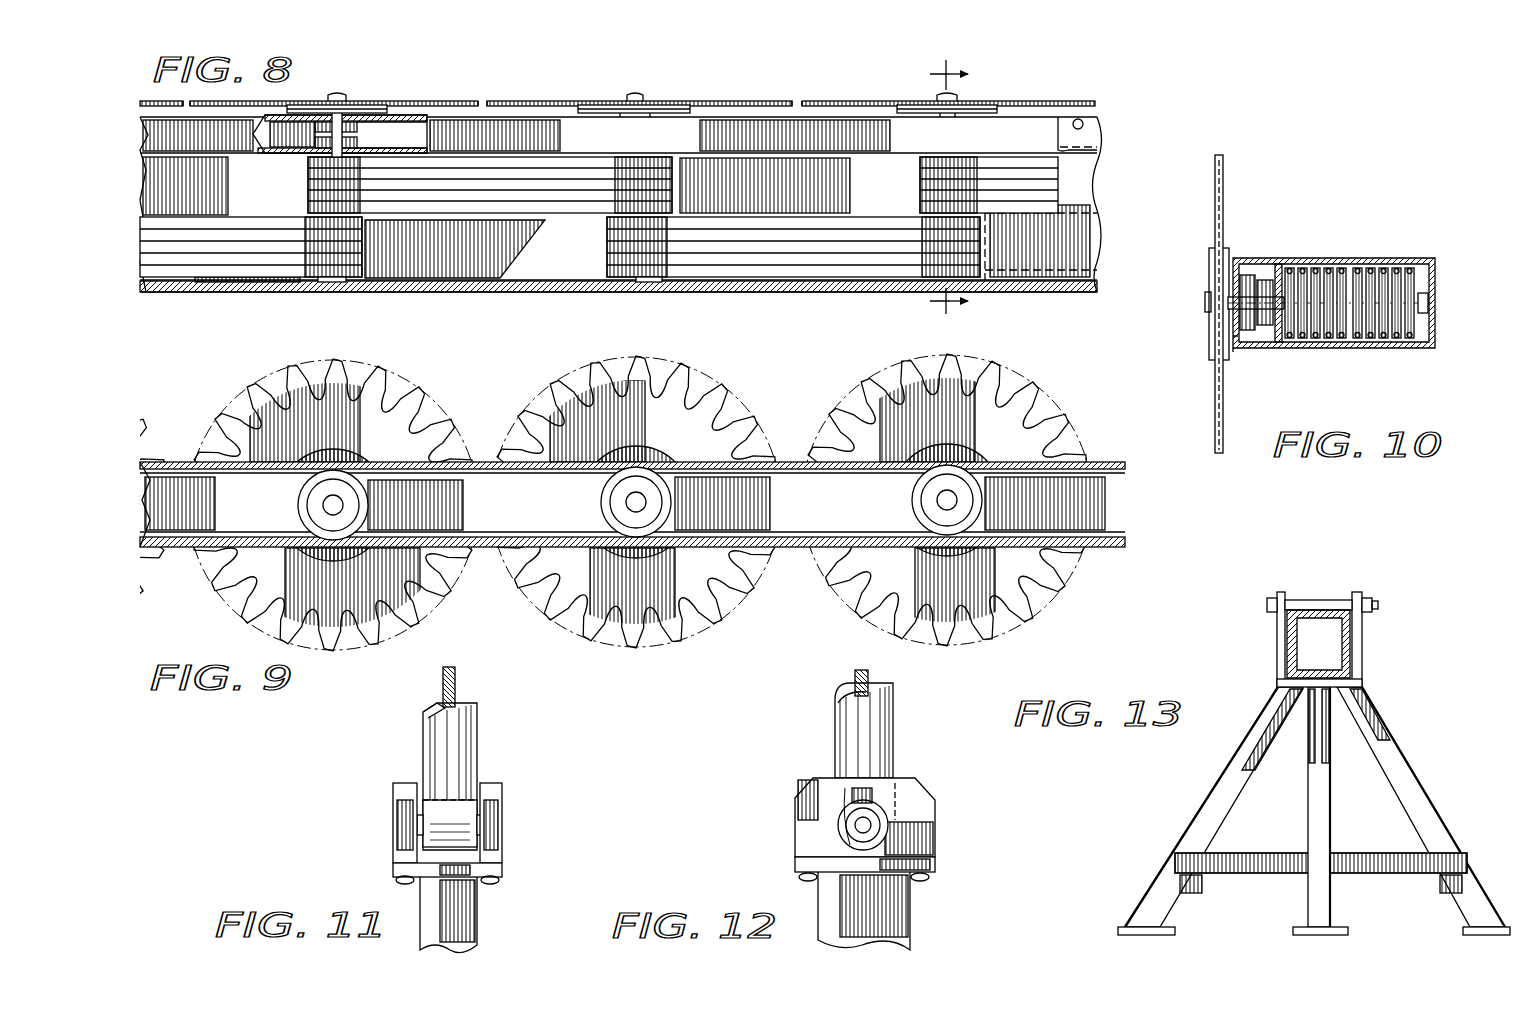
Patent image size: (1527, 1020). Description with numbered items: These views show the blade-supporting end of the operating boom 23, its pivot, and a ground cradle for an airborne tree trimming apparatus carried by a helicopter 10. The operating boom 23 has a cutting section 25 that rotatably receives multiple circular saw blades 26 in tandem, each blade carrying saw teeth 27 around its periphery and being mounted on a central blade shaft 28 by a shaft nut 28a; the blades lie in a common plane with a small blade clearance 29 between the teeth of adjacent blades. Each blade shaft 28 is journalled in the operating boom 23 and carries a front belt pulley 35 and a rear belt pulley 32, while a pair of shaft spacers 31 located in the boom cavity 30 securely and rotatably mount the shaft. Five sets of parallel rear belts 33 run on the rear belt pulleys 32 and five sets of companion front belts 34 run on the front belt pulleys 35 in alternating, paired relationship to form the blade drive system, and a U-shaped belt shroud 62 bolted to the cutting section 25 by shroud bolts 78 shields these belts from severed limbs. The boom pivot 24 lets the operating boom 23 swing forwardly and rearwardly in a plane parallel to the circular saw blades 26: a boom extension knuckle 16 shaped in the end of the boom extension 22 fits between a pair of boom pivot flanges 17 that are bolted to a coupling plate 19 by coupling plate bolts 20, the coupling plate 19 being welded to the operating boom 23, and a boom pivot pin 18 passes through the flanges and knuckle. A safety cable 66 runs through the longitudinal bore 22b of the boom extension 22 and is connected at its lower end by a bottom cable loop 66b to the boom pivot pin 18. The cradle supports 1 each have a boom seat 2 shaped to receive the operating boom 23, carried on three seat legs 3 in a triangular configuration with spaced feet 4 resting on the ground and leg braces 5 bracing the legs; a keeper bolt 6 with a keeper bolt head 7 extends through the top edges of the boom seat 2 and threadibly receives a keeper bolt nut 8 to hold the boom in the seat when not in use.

In FIG. 13, the cradle supports 1 is at (1392, 628).
In FIG. 13, the boom seat 2 is at (1372, 654).
In FIG. 13, the seat legs 3 is at (1383, 748).
In FIG. 13, the feet 4 is at (1170, 920).
In FIG. 13, the leg braces 5 is at (1385, 856).
In FIG. 13, the keeper bolt 6 is at (1333, 594).
In FIG. 13, the keeper bolt head 7 is at (1270, 598).
In FIG. 13, the keeper bolt nut 8 is at (1366, 598).
In FIG. 8, the helicopter 10 is at (931, 187).
In FIG. 11, the boom extension knuckle 16 is at (468, 830).
In FIG. 12, the boom extension knuckle 16 is at (835, 815).
In FIG. 11, the boom pivot flanges 17 is at (400, 826).
In FIG. 12, the boom pivot flanges 17 is at (920, 842).
In FIG. 12, the boom pivot pin 18 is at (887, 824).
In FIG. 11, the coupling plate 19 is at (398, 868).
In FIG. 12, the coupling plate 19 is at (802, 865).
In FIG. 11, the coupling plate bolts 20 is at (496, 884).
In FIG. 12, the coupling plate bolts 20 is at (930, 878).
In FIG. 11, the boom extension 22 is at (482, 766).
In FIG. 12, the boom extension 22 is at (832, 731).
In FIG. 11, the longitudinal bore 22b is at (436, 702).
In FIG. 8, the operating boom 23 is at (763, 160).
In FIG. 10, the operating boom 23 is at (1258, 270).
In FIG. 9, the operating boom 23 is at (178, 458).
In FIG. 11, the operating boom 23 is at (486, 928).
In FIG. 12, the operating boom 23 is at (916, 921).
In FIG. 13, the operating boom 23 is at (1316, 660).
In FIG. 11, the boom pivot 24 is at (506, 806).
In FIG. 8, the cutting section 25 is at (613, 88).
In FIG. 9, the cutting section 25 is at (784, 366).
In FIG. 8, the circular saw blades 26 is at (862, 92).
In FIG. 10, the circular saw blades 26 is at (1232, 211).
In FIG. 9, the circular saw blades 26 is at (532, 613).
In FIG. 9, the saw teeth 27 is at (425, 406).
In FIG. 8, the blade shaft 28 is at (668, 113).
In FIG. 10, the blade shaft 28 is at (1438, 301).
In FIG. 9, the blade shaft 28 is at (326, 502).
In FIG. 8, the shaft nut 28a is at (338, 98).
In FIG. 10, the shaft nut 28a is at (1208, 302).
In FIG. 8, the blade clearance 29 is at (487, 101).
In FIG. 8, the boom cavity 30 is at (416, 135).
In FIG. 9, the boom cavity 30 is at (505, 494).
In FIG. 8, the shaft spacers 31 is at (316, 143).
In FIG. 10, the shaft spacers 31 is at (1252, 340).
In FIG. 8, the rear belt pulley 32 is at (344, 283).
In FIG. 10, the rear belt pulley 32 is at (1412, 272).
In FIG. 9, the rear belt pulley 32 is at (312, 514).
In FIG. 8, the rear belts 33 is at (364, 232).
In FIG. 10, the rear belts 33 is at (1412, 341).
In FIG. 8, the front belts 34 is at (496, 185).
In FIG. 10, the front belts 34 is at (1312, 341).
In FIG. 9, the front belts 34 is at (437, 470).
In FIG. 8, the front belt pulley 35 is at (360, 156).
In FIG. 10, the front belt pulley 35 is at (1262, 274).
In FIG. 8, the belt shroud 62 is at (1086, 222).
In FIG. 10, the belt shroud 62 is at (1318, 259).
In FIG. 11, the safety cable 66 is at (456, 700).
In FIG. 12, the safety cable 66 is at (868, 692).
In FIG. 12, the bottom cable loop 66b is at (877, 813).
In FIG. 8, the shroud bolts 78 is at (1086, 124).
In FIG. 10, the shroud bolts 78 is at (1238, 352).